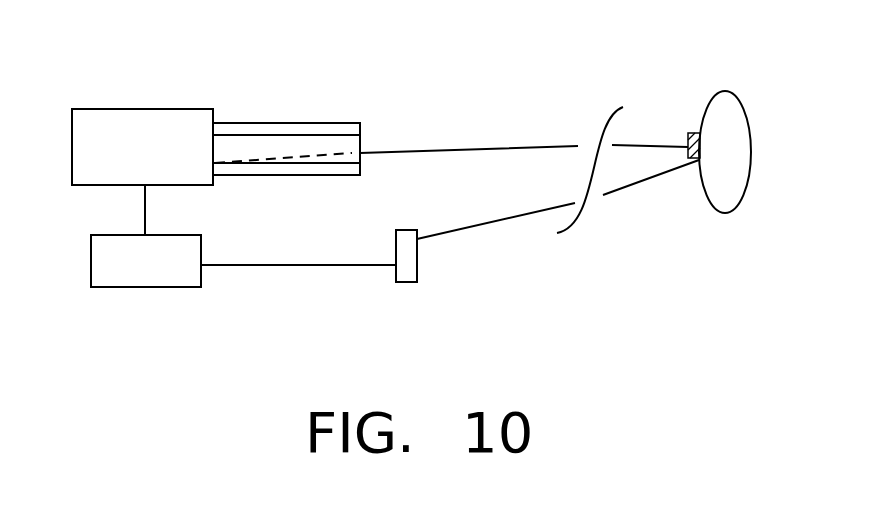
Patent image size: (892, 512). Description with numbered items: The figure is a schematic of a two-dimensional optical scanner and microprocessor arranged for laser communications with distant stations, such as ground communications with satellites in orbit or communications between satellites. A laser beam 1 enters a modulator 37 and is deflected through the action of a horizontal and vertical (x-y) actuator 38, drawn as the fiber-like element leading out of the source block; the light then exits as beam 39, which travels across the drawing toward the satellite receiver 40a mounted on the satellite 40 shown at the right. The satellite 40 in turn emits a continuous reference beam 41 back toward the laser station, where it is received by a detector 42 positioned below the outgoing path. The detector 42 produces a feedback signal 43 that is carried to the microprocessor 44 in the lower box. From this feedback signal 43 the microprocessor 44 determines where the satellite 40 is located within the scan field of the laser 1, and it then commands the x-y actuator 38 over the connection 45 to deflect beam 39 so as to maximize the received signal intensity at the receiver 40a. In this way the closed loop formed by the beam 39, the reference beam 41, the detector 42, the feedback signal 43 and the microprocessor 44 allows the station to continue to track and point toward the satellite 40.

The laser beam 1 is at (142, 147).
The modulator 37 is at (322, 155).
The horizontal and vertical (x-y) actuator 38 is at (243, 122).
The beam 39 is at (432, 150).
The satellite 40 is at (725, 152).
The satellite receiver 40a is at (698, 133).
The continuous reference beam 41 is at (632, 185).
The detector 42 is at (418, 258).
The feedback signal 43 is at (328, 267).
The microprocessor 44 is at (146, 261).
The control line 45 is at (143, 201).